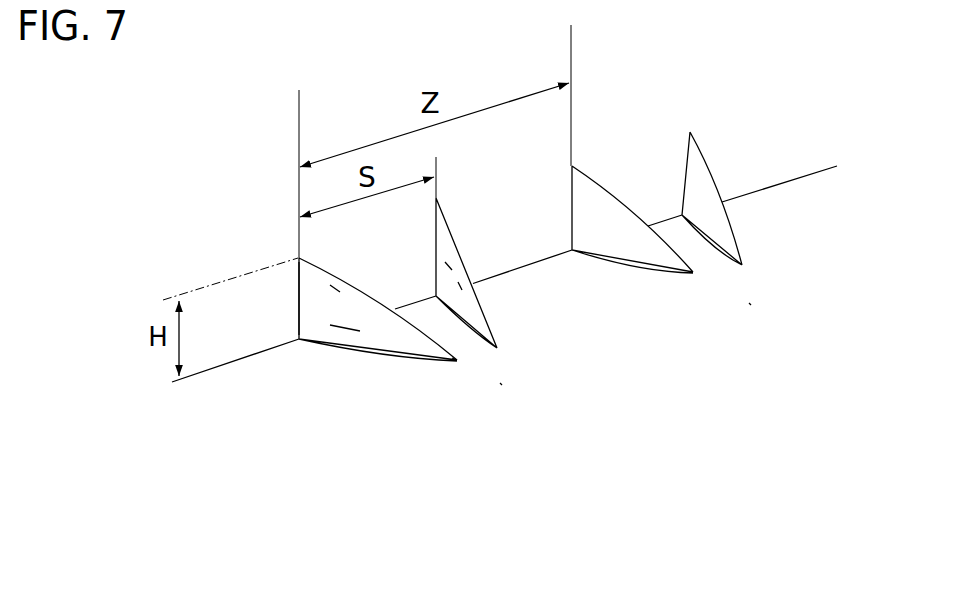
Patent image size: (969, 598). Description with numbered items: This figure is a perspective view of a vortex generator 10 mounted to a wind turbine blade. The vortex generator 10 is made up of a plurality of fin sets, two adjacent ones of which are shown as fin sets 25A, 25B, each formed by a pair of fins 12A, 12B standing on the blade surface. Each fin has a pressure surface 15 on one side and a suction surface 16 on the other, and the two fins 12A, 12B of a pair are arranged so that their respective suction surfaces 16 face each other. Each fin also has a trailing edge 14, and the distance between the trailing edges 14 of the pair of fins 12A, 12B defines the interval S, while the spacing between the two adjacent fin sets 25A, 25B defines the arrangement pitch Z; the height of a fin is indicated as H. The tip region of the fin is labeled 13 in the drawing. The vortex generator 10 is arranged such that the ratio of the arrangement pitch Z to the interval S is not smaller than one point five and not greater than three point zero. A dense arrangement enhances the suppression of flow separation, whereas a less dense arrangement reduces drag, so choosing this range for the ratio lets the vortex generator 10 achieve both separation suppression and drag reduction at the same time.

The vortex generator 10 is at (146, 130).
The fin 12A is at (297, 325).
The fin 12B is at (450, 227).
The fin tip (trailing end) 13 is at (457, 362).
The trailing edge 14 is at (298, 295).
The pressure surface 15 is at (343, 328).
The suction surface 16 is at (332, 290).
The fin set 25A is at (498, 385).
The fin set 25B is at (747, 305).